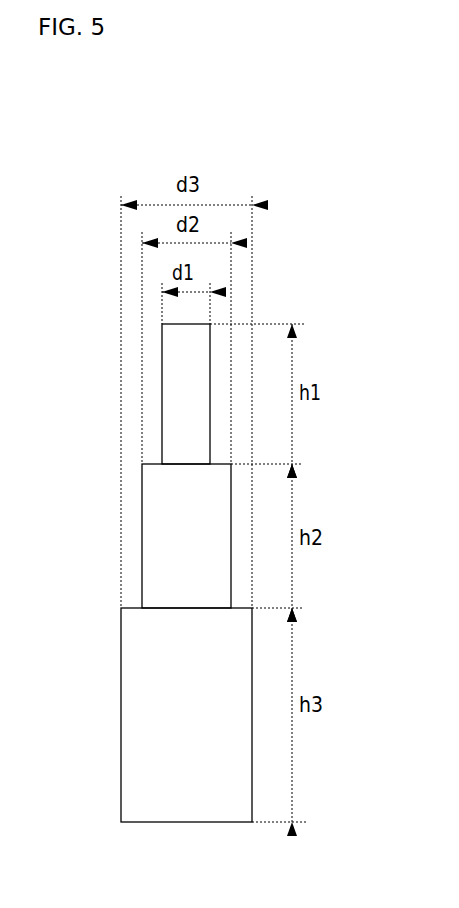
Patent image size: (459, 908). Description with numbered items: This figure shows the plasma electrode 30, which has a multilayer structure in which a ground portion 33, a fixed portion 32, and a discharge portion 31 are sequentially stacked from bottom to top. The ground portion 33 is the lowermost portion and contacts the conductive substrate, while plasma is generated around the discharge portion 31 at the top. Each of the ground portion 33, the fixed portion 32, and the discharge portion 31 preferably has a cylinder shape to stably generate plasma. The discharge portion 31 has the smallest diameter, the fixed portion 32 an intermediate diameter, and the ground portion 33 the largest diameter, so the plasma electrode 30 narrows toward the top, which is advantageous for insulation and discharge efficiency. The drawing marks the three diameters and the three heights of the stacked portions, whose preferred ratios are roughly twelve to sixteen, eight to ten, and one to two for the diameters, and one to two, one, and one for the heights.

The plasma electrode 30 is at (348, 118).
The discharge portion 31 is at (173, 388).
The fixed portion 32 is at (153, 541).
The ground portion 33 is at (132, 729).